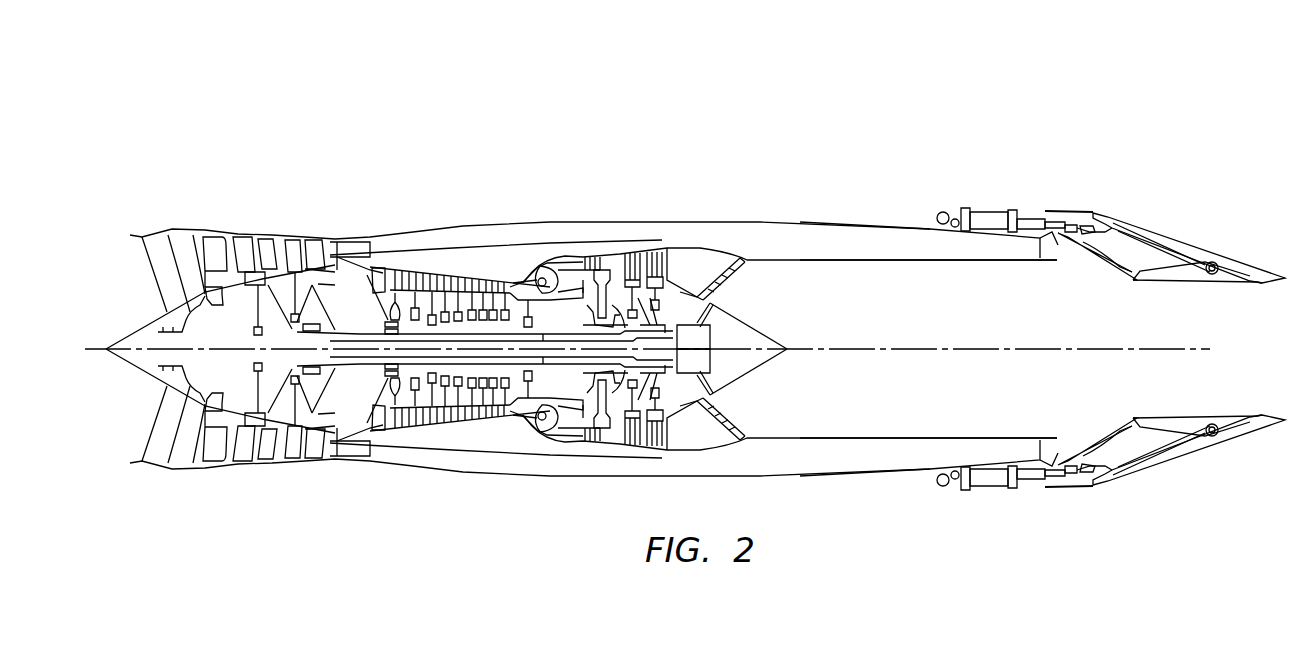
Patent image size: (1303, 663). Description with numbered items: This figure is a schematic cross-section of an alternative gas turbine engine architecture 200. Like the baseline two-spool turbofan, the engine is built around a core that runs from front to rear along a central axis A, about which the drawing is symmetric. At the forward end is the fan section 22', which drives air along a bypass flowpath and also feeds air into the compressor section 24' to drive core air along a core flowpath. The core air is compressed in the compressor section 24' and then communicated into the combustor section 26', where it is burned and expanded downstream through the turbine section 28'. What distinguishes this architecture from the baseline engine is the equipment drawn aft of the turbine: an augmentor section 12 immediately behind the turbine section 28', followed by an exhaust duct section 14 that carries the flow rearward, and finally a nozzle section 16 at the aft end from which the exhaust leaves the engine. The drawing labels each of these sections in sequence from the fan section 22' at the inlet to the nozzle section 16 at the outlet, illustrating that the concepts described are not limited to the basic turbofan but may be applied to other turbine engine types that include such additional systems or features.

The alternative engine architecture 200 is at (1018, 96).
The fan section 22' is at (238, 287).
The compressor section 24' is at (501, 276).
The combustor section 26' is at (555, 274).
The turbine section 28' is at (640, 281).
The augmentor section 12 is at (795, 165).
The exhaust duct section 14 is at (1048, 165).
The nozzle section 16 is at (1283, 165).
The engine central longitudinal axis A is at (1204, 351).